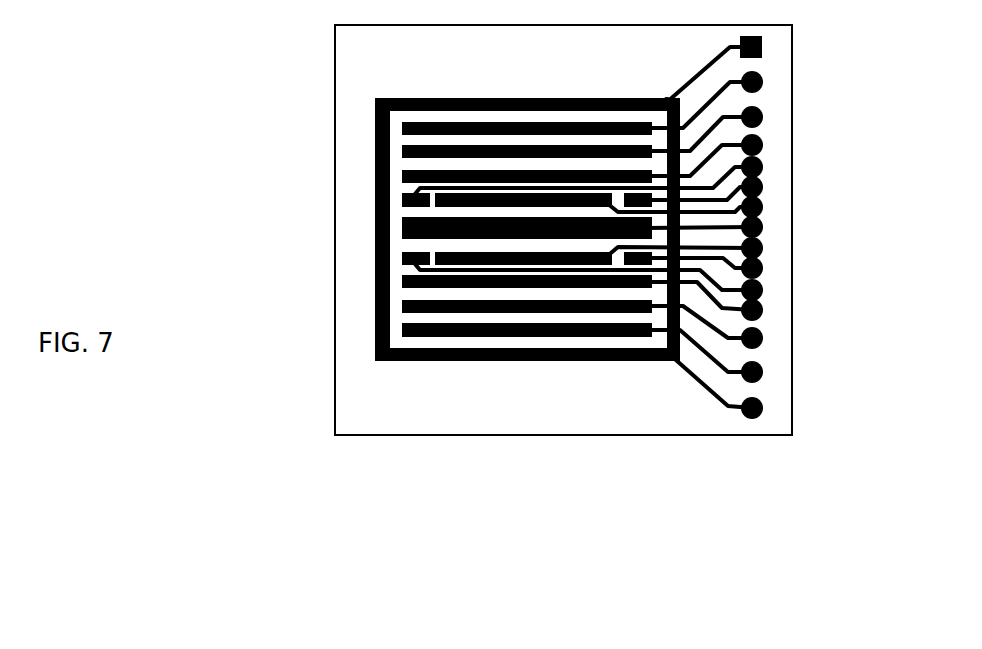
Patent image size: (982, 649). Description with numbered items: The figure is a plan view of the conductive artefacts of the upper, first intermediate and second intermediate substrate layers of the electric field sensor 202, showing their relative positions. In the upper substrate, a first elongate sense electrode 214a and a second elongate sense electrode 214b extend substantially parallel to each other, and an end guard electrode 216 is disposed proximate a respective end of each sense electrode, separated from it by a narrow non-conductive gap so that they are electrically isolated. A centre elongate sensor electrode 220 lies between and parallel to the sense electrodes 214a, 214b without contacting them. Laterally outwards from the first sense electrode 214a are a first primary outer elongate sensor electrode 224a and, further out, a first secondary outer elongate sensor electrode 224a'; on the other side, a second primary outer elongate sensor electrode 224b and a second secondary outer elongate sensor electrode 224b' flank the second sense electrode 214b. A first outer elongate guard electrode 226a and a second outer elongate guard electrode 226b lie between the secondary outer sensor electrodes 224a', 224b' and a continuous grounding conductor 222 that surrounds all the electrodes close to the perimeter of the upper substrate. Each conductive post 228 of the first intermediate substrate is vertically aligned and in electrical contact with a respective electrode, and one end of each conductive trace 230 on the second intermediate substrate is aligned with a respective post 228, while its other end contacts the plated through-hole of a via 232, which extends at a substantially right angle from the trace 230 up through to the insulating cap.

The electric field sensor 202 is at (200, 615).
The first elongate sense electrode 214a is at (457, 186).
The second elongate sense electrode 214b is at (457, 274).
The end guard electrode 216 is at (404, 200).
The centre elongate sensor electrode 220 is at (764, 247).
The continuous grounding conductor 222 is at (490, 92).
The first primary outer elongate sensor electrode 224a is at (643, 185).
The first secondary outer elongate sensor electrode 224a' is at (761, 121).
The second primary outer elongate sensor electrode 224b is at (643, 284).
The second secondary outer elongate sensor electrode 224b' is at (758, 349).
The first outer elongate guard electrode 226a is at (455, 111).
The second outer elongate guard electrode 226b is at (455, 348).
The conductive post 228 is at (665, 102).
The conductive trace 230 is at (683, 375).
The via 232 is at (766, 60).